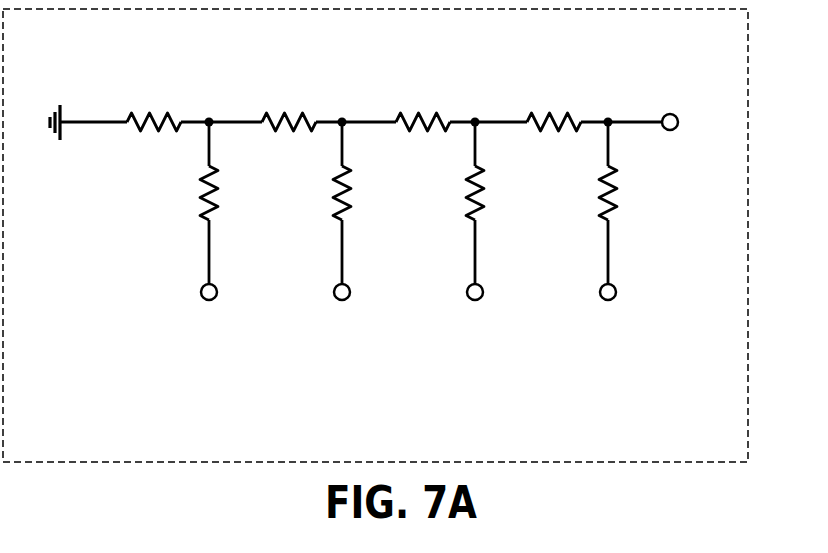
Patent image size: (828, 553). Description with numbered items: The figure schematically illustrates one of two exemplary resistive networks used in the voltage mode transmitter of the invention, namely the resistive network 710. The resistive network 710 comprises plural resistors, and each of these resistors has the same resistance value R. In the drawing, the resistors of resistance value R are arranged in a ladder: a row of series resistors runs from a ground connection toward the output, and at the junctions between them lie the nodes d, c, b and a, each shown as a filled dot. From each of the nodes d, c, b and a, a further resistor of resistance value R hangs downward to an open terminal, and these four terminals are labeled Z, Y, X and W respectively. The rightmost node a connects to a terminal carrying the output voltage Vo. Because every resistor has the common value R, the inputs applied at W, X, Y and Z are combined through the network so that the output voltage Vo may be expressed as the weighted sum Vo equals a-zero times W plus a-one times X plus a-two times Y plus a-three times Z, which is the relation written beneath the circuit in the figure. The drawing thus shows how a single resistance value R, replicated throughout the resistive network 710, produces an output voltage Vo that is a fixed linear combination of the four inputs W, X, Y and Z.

The resistive network 710 is at (375, 248).
The resistance value R is at (372, 166).
The node a is at (608, 109).
The node b is at (474, 109).
The node c is at (341, 109).
The node d is at (208, 109).
The input term W is at (623, 264).
The input term X is at (488, 264).
The input term Y is at (355, 264).
The input term Z is at (223, 264).
The output voltage Vo is at (654, 123).